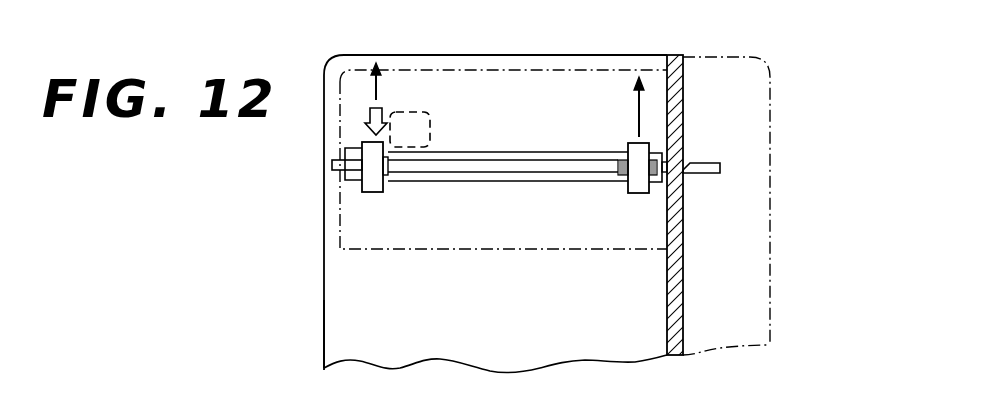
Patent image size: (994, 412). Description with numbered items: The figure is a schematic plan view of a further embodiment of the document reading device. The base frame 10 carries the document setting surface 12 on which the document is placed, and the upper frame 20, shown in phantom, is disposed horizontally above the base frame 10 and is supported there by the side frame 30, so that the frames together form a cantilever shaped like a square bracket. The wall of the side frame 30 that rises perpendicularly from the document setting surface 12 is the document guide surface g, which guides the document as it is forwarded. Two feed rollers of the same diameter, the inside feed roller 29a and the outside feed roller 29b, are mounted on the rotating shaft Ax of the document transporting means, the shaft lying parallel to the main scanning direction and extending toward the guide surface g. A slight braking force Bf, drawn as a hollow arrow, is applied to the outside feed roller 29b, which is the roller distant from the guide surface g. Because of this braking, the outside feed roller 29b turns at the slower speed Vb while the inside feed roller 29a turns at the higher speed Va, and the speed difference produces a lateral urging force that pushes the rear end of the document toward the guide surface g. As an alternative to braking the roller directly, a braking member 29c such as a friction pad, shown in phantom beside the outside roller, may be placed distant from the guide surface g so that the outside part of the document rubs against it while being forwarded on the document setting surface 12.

The base frame 10 is at (324, 293).
The document setting surface 12 is at (342, 312).
The upper frame 20 is at (340, 224).
The inside feed roller 29a is at (632, 195).
The outside feed roller 29b is at (373, 192).
The braking member 29c is at (430, 112).
The side frame 30 is at (698, 58).
The rotating shaft Ax is at (333, 165).
The braking force Bf is at (365, 128).
The speed of inside feed roller Va is at (622, 107).
The speed of outside feed roller Vb is at (397, 82).
The document guide surface g is at (667, 316).